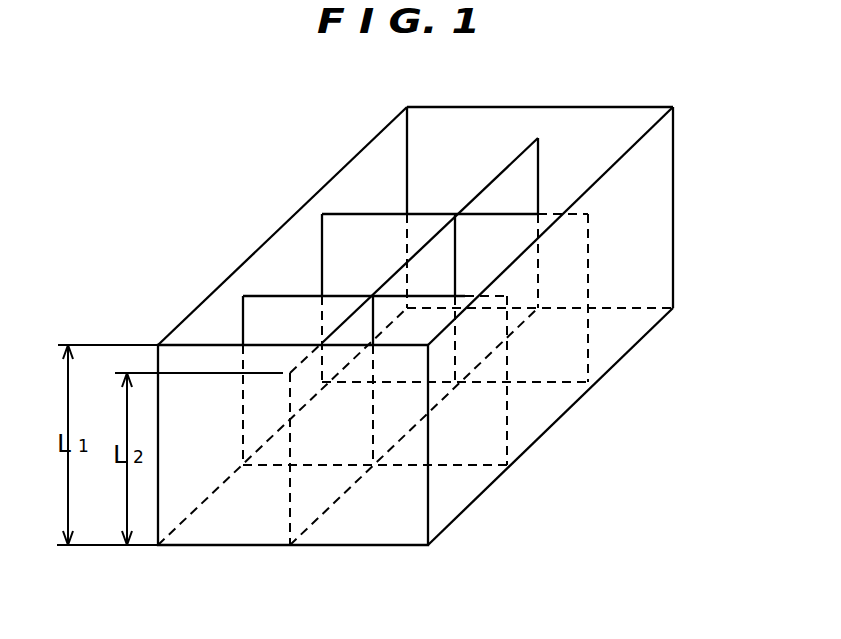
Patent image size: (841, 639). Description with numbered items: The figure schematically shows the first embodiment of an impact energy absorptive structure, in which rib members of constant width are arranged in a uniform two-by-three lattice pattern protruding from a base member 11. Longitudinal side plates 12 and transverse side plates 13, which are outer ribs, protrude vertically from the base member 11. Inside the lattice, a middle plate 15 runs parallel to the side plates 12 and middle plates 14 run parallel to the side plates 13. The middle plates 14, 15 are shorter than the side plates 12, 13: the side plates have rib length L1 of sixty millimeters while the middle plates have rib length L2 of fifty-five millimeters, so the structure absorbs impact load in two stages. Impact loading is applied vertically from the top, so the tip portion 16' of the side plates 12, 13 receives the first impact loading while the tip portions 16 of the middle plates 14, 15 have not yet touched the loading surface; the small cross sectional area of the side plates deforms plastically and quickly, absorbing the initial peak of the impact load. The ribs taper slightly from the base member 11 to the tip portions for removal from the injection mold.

The base member 11 is at (390, 512).
The longitudinal side plate 12 is at (648, 293).
The transverse side plate 13 is at (213, 523).
The middle plate 14 is at (268, 322).
The middle plate 15 is at (515, 180).
The tip portion 16 is at (444, 253).
The tip portion 16' is at (540, 177).